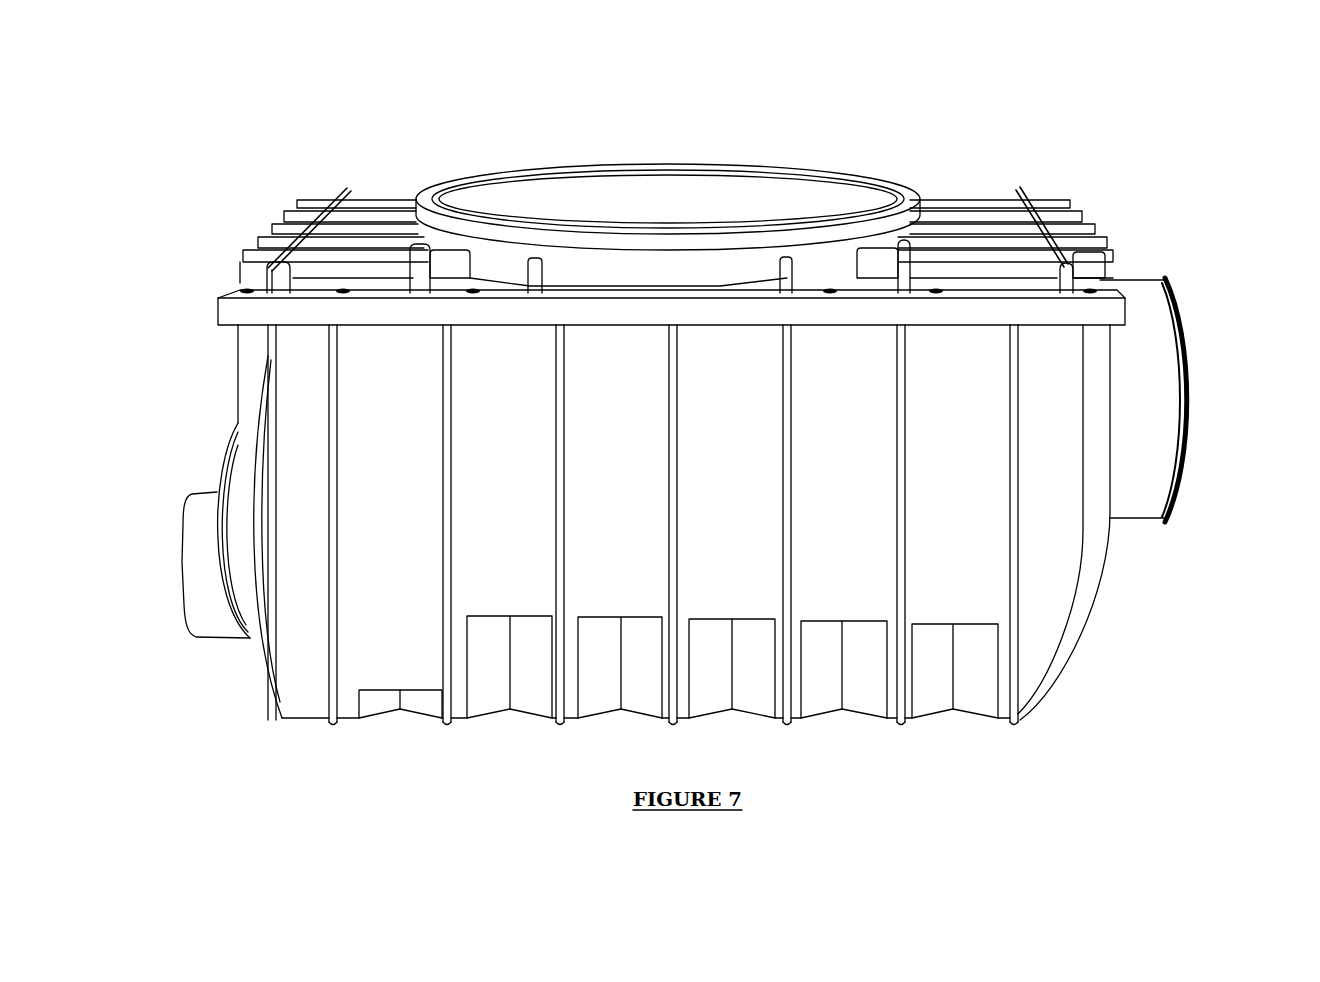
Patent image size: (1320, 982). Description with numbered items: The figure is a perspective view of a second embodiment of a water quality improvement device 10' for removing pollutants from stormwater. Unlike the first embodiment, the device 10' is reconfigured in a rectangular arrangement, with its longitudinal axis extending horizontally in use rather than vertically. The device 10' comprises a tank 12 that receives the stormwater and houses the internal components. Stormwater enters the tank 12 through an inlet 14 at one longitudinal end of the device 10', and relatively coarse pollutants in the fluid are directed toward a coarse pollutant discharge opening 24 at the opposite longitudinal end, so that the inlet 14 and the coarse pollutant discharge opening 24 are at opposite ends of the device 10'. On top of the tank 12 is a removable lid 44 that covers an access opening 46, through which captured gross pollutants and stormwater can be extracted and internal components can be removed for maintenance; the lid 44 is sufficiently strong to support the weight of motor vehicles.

The water quality improvement device 10' is at (703, 410).
The tank 12 is at (953, 549).
The inlet 14 is at (1142, 477).
The coarse pollutant discharge opening 24 is at (200, 596).
The removable lid 44 is at (719, 171).
The access opening 46 is at (777, 212).